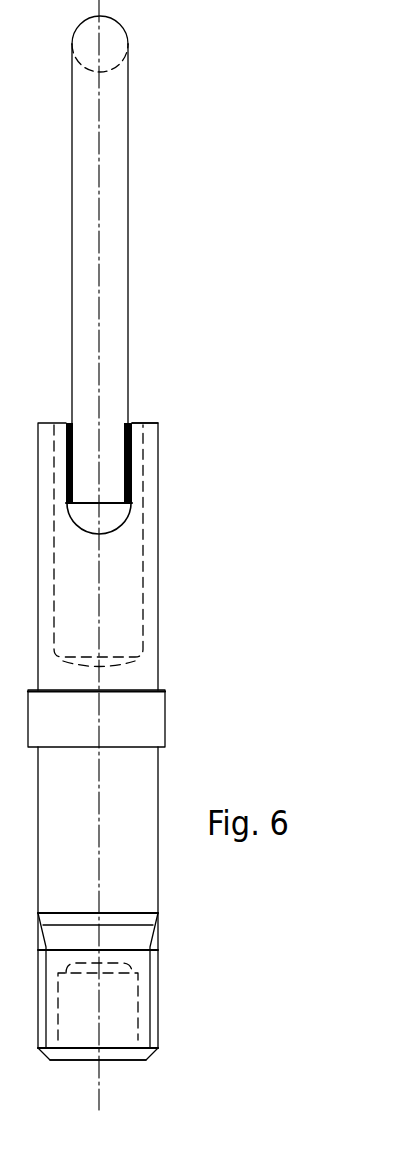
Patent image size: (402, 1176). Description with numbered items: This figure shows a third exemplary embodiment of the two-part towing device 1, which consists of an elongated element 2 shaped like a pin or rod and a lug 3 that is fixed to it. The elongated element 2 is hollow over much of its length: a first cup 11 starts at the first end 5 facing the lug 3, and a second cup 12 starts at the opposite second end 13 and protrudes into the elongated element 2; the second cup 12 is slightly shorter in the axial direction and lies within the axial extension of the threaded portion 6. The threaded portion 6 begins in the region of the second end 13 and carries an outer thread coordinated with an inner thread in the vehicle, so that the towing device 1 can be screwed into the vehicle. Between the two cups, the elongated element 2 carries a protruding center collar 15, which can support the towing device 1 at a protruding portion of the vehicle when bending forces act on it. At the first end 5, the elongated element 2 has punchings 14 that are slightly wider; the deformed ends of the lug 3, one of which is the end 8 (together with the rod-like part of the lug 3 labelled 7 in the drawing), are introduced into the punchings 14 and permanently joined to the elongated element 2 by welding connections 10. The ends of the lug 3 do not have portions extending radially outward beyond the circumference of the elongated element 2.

The towing device 1 is at (179, 488).
The elongated element 2 is at (162, 638).
The lug 3 is at (134, 248).
The first end 5 is at (147, 423).
The threaded portion 6 is at (152, 1015).
The pin shank 7 is at (113, 210).
The end of the lug 8 is at (112, 392).
The welding connection 10 is at (128, 462).
The first cup 11 is at (105, 615).
The second cup 12 is at (117, 1002).
The second end 13 is at (145, 1060).
The punchings 14 is at (110, 519).
The center collar 15 is at (142, 725).